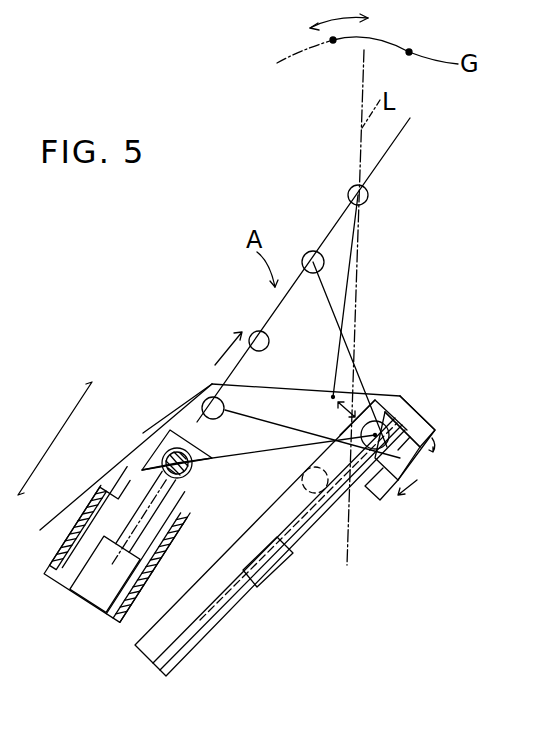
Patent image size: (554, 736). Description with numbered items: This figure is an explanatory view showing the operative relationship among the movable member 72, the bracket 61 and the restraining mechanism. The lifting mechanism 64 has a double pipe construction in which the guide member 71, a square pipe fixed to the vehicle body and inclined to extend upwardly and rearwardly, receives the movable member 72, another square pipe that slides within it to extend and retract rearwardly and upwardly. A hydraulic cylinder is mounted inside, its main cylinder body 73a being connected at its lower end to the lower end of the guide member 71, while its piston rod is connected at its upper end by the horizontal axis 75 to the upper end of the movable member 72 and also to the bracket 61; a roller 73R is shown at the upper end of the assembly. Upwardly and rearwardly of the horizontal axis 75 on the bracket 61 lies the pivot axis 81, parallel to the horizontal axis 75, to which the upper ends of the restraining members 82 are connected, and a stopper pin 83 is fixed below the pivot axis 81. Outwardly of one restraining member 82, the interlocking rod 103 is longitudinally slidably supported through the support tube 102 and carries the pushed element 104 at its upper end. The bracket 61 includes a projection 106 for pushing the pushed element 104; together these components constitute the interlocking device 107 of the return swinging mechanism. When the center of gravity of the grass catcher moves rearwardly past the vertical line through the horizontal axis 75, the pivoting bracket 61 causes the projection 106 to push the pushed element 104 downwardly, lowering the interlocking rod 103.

The bracket 61 is at (205, 400).
The lifting mechanism 64 is at (97, 511).
The guide member 71 is at (93, 497).
The movable member 72 is at (120, 473).
The main cylinder body 73a is at (97, 560).
The roller 73R is at (160, 456).
The horizontal axis 75 is at (313, 252).
The pivot axis 81 is at (385, 425).
The restraining member 82 is at (222, 583).
The stopper pin 83 is at (318, 493).
The support tube 102 is at (275, 578).
The interlocking rod 103 is at (188, 637).
The pushed element 104 is at (405, 470).
The projection 106 is at (425, 427).
The interlocking device 107 is at (442, 460).